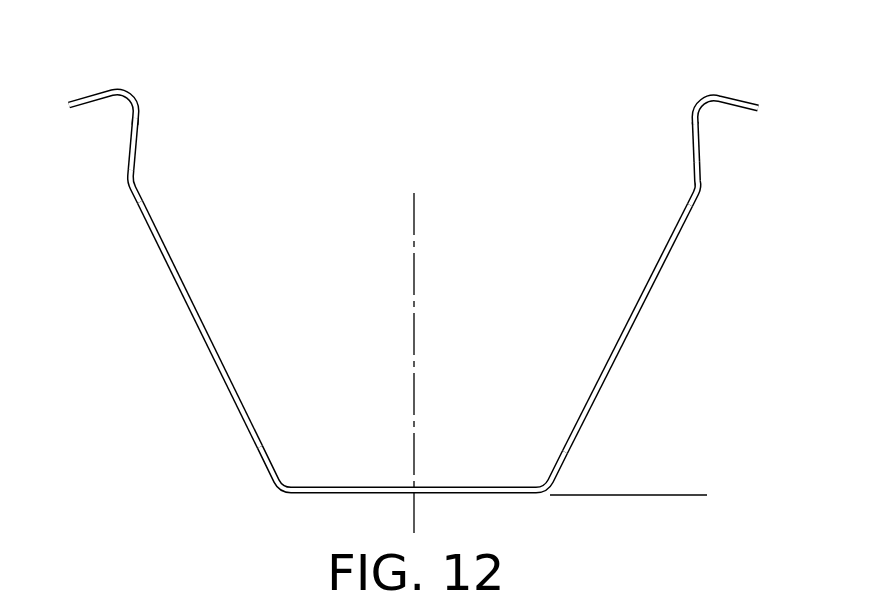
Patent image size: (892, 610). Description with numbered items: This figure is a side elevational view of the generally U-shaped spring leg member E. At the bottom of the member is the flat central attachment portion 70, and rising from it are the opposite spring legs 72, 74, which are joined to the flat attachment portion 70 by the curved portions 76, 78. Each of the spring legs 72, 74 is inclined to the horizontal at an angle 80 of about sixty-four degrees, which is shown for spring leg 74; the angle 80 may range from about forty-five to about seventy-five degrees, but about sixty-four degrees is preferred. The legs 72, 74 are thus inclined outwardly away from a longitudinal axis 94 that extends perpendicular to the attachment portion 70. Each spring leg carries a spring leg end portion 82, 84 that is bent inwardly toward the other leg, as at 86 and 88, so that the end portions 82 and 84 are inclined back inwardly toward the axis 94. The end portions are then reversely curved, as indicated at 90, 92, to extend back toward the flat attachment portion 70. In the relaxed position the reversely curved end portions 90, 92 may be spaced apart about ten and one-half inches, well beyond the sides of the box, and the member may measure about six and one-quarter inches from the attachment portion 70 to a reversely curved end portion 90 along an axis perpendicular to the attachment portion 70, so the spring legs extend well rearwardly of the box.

The flat central attachment portion 70 is at (319, 487).
The spring leg 72 is at (168, 276).
The spring leg 74 is at (663, 271).
The curved portion 76 is at (286, 493).
The curved portion 78 is at (537, 493).
The angle 80 is at (619, 352).
The spring leg end portion 82 is at (135, 152).
The spring leg end portion 84 is at (694, 148).
The inward bend 86 is at (129, 179).
The inward bend 88 is at (703, 186).
The reversely curved end portion 90 is at (120, 96).
The reversely curved end portion 92 is at (712, 100).
The longitudinal axis 94 is at (415, 212).
The spring leg member E is at (200, 342).